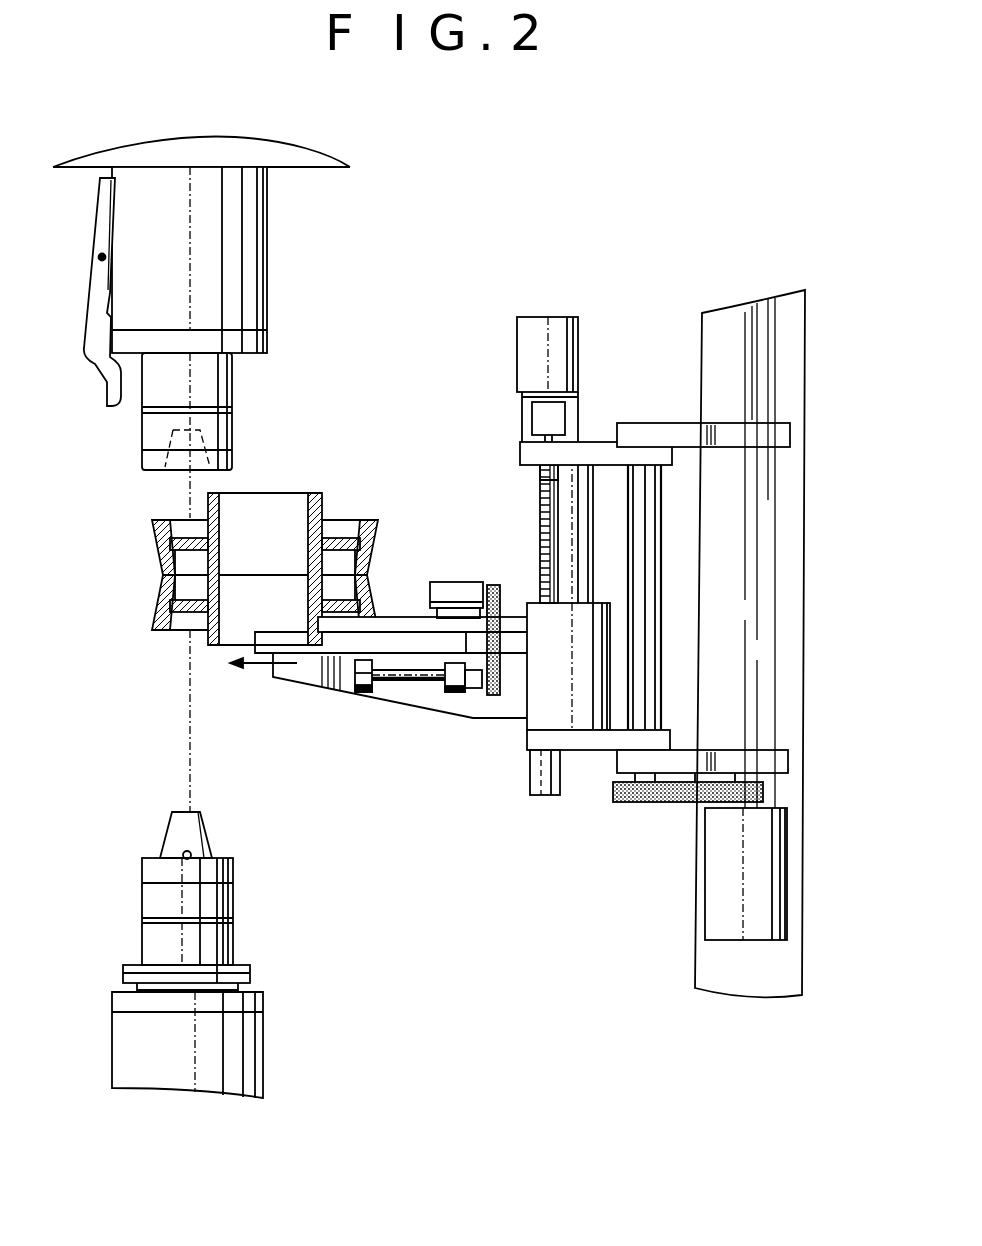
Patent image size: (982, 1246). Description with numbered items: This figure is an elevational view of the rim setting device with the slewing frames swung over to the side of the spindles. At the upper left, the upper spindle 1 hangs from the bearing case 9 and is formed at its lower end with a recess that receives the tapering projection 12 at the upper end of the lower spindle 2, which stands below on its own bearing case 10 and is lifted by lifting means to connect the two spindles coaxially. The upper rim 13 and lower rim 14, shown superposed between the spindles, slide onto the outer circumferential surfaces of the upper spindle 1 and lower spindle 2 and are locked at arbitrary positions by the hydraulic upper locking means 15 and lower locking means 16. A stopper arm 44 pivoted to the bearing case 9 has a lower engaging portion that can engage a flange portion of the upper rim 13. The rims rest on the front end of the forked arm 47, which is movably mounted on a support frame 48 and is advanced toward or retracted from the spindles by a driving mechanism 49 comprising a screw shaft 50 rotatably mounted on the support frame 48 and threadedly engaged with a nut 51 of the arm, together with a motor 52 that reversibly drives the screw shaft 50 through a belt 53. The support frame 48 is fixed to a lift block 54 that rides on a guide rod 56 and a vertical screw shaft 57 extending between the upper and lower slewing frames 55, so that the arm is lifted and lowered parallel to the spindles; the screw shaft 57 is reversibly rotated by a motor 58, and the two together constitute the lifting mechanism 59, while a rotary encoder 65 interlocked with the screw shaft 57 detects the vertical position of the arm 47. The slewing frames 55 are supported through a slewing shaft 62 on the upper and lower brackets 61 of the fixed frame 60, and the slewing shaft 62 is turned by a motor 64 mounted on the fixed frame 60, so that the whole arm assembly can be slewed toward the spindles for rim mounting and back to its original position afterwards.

The bearing case 9 is at (265, 256).
The stopper arm 44 is at (88, 373).
The upper spindle 1 is at (232, 393).
The upper locking means 15 is at (148, 430).
The upper rim 13 is at (160, 548).
The lower rim 14 is at (160, 607).
The forked arm 47 is at (355, 645).
The support frame 48 is at (297, 673).
The driving mechanism 49 is at (418, 694).
The screw shaft 50 is at (370, 690).
The nut 51 is at (455, 693).
The motor 52 is at (452, 592).
The belt 53 is at (507, 603).
The lift block 54 is at (523, 697).
The slewing frames 55 is at (600, 452).
The guide rod 56 is at (593, 560).
The screw shaft 57 is at (540, 515).
The lifting mechanism 59 is at (540, 485).
The motor 58 is at (567, 348).
The fixed frame 60 is at (785, 515).
The brackets 61 is at (785, 435).
The slewing shaft 62 is at (655, 710).
The motor 64 is at (778, 903).
The rotary encoder 65 is at (540, 795).
The tapering projection 12 is at (165, 835).
The lower locking means 16 is at (150, 902).
The lower spindle 2 is at (235, 942).
The bearing case 10 is at (125, 1047).